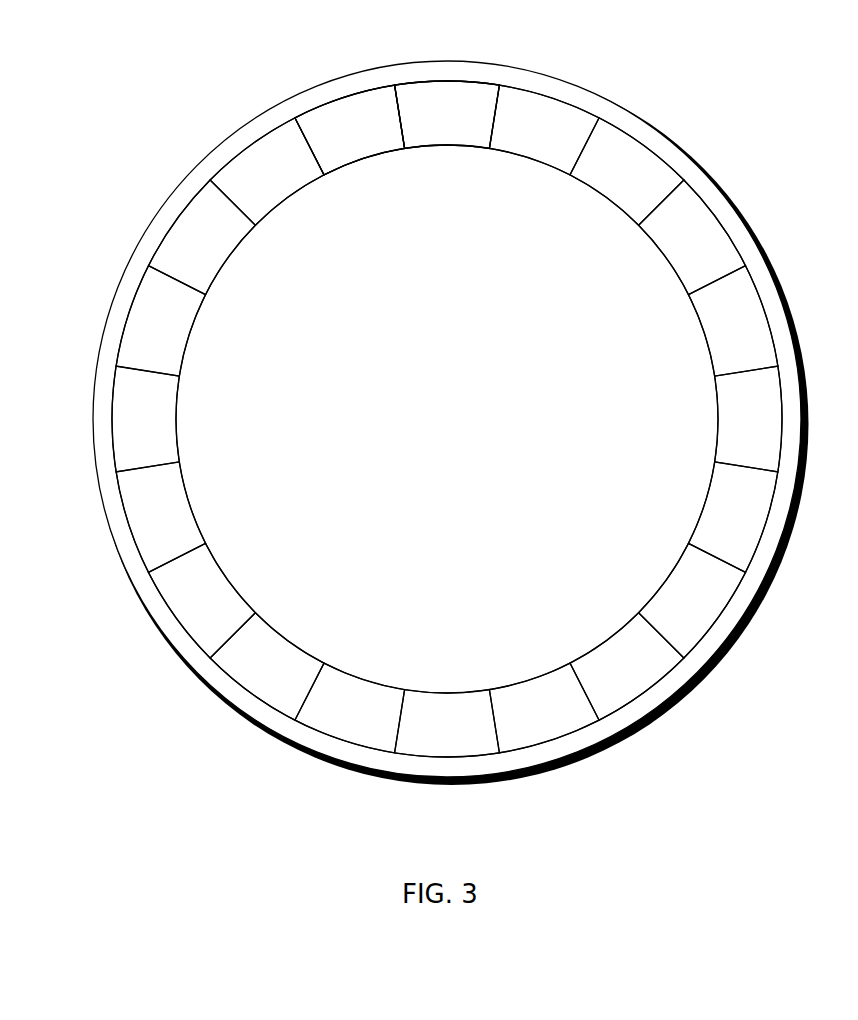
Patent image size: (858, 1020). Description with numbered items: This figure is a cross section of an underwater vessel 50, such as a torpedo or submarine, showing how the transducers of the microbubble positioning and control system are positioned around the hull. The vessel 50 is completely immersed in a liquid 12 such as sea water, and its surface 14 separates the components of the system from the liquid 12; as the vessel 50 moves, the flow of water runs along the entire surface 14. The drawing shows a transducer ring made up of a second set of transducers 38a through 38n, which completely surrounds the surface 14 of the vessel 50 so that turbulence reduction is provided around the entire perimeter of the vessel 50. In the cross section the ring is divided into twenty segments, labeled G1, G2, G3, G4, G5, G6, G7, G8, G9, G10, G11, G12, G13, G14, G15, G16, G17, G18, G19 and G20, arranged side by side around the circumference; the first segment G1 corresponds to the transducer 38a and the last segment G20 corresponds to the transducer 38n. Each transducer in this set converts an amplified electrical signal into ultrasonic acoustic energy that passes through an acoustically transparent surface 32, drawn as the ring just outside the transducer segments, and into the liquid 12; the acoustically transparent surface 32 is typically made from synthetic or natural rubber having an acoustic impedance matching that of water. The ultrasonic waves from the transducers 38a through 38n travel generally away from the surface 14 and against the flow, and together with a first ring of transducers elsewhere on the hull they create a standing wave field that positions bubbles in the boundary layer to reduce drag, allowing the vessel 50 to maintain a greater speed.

The liquid 12 is at (839, 125).
The surface 14 is at (568, 80).
The acoustically transparent surface 32 is at (648, 132).
The transducer 38a is at (472, 97).
The transducer 38n is at (340, 103).
The underwater vessel 50 is at (460, 422).
The gate segment 1 G1 is at (447, 114).
The gate segment 2 G2 is at (544, 130).
The gate segment 3 G3 is at (627, 172).
The gate segment 4 G4 is at (692, 237).
The gate segment 5 G5 is at (733, 321).
The gate segment 6 G6 is at (748, 419).
The gate segment 7 G7 is at (733, 517).
The gate segment 8 G8 is at (692, 600).
The gate segment 9 G9 is at (627, 667).
The gate segment 10 G10 is at (544, 708).
The gate segment 11 G11 is at (447, 723).
The gate segment 12 G12 is at (350, 708).
The gate segment 13 G13 is at (267, 667).
The gate segment 14 G14 is at (202, 600).
The gate segment 15 G15 is at (160, 517).
The gate segment 16 G16 is at (145, 419).
The gate segment 17 G17 is at (160, 321).
The gate segment 18 G18 is at (202, 237).
The gate segment 19 G19 is at (267, 172).
The gate segment 20 G20 is at (350, 130).